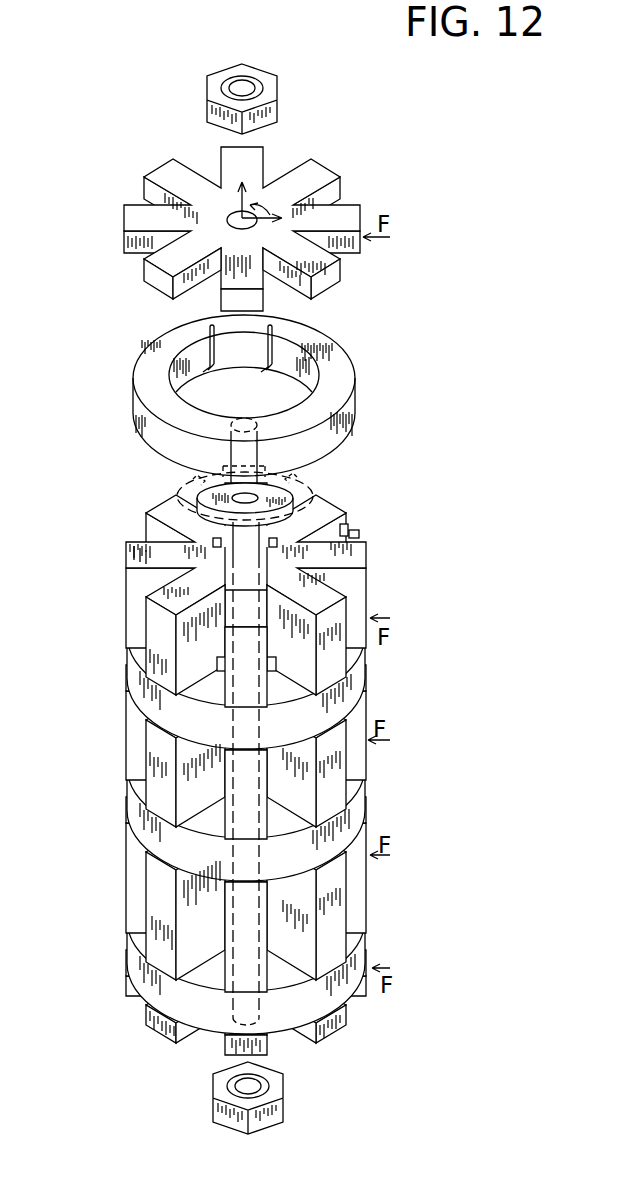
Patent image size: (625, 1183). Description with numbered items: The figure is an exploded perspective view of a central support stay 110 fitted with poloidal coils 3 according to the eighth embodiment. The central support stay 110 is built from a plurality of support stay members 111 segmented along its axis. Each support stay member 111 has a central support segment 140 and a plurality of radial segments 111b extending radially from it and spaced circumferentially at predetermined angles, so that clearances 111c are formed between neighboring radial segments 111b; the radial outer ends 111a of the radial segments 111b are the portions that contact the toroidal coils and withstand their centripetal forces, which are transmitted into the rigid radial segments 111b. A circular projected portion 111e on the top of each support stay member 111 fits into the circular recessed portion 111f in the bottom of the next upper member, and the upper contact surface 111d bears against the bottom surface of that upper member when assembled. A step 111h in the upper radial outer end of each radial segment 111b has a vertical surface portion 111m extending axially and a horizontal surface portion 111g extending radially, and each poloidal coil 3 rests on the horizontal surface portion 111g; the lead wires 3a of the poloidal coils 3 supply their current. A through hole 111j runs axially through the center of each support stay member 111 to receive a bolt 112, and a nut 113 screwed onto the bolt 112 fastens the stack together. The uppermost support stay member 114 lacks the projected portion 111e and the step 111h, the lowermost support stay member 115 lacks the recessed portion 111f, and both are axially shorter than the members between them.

The poloidal coil 3 is at (271, 395).
The lead wires 3a is at (273, 326).
The central support stay 110 is at (285, 594).
The support stay member 111 is at (259, 563).
The radial outer end 111a is at (354, 638).
The radial segment 111b is at (360, 602).
The clearance 111c is at (290, 820).
The upper contact surface 111d is at (250, 494).
The circular projected portion 111e is at (198, 483).
The circular recessed portion 111f is at (276, 664).
The horizontal surface portion 111g is at (359, 537).
The step 111h is at (348, 535).
The through hole 111j is at (180, 550).
The vertical surface portion 111m is at (197, 572).
The bolt 112 is at (263, 492).
The nut 113 is at (277, 92).
The uppermost support stay member 114 is at (126, 240).
The lowermost support stay member 115 is at (155, 1022).
The central support segment 140 is at (195, 491).